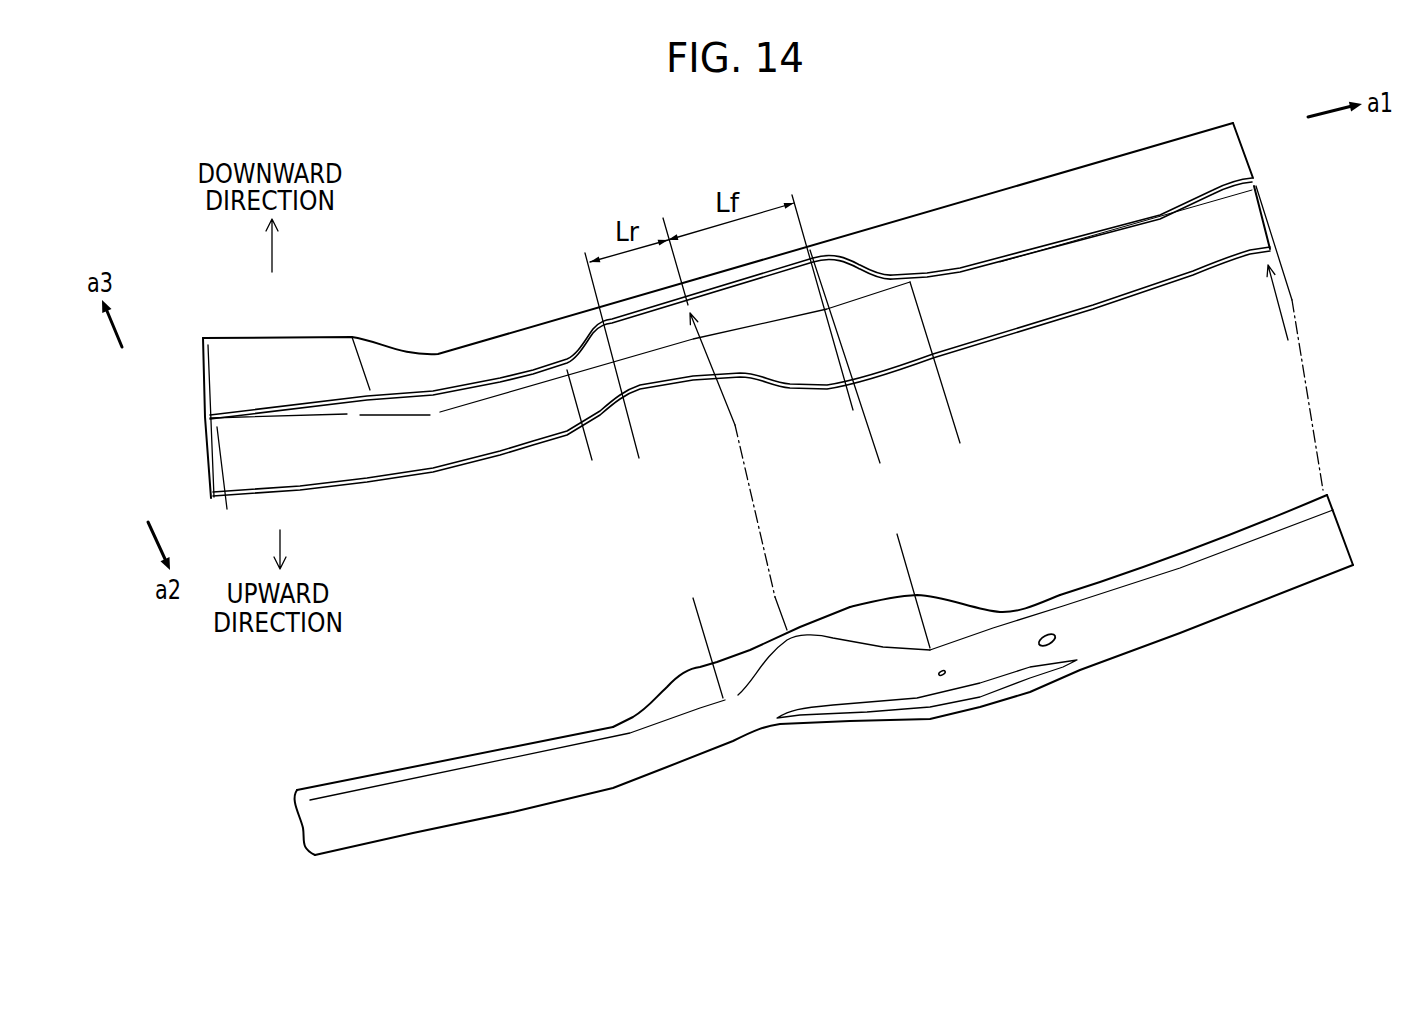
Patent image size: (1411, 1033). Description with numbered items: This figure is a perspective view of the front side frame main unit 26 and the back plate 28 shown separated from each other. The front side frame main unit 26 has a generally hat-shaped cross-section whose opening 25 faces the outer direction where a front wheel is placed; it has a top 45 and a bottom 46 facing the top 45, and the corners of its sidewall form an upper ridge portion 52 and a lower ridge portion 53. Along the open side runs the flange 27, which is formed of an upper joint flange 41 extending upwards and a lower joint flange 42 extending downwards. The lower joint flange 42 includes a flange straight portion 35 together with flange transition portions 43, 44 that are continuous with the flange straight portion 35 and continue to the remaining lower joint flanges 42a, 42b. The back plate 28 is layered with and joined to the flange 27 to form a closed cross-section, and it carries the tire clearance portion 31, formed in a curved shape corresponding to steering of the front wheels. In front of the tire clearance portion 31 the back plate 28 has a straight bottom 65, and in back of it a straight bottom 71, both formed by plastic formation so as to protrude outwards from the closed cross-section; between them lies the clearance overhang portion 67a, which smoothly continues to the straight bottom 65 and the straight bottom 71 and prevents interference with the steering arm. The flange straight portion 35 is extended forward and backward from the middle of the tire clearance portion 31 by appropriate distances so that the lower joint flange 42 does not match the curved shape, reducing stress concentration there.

The opening 25 is at (1083, 268).
The front side frame main unit 26 is at (520, 330).
The flange 27 is at (731, 272).
The back plate 28 is at (520, 747).
The tire clearance portion 31 is at (895, 535).
The flange straight portion 35 is at (646, 442).
The upper joint flange 41 is at (1030, 335).
The lower joint flange 42 is at (1010, 252).
The remaining lower joint flange 42a is at (1313, 344).
The remaining lower joint flange 42b is at (579, 450).
The flange transition portion 43 is at (958, 442).
The flange transition portion 44 is at (640, 451).
The top 45 is at (988, 325).
The bottom 46 is at (940, 237).
The upper ridge portion 52 is at (206, 420).
The lower ridge portion 53 is at (218, 338).
The straight bottom 65 is at (937, 613).
The clearance overhang portion 67a is at (810, 660).
The straight bottom 71 is at (700, 687).